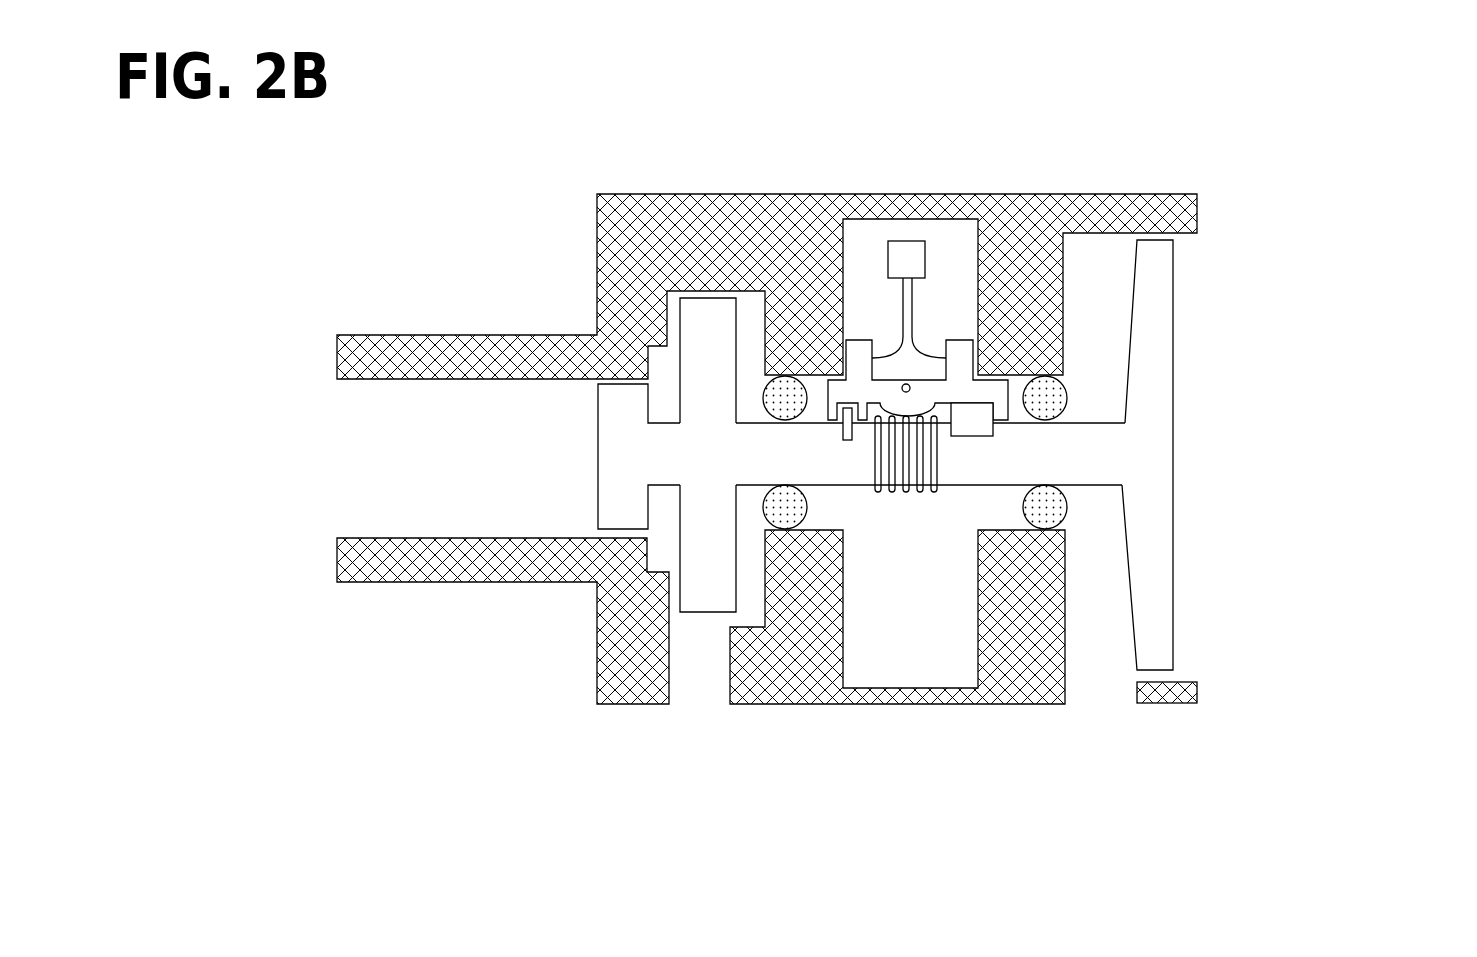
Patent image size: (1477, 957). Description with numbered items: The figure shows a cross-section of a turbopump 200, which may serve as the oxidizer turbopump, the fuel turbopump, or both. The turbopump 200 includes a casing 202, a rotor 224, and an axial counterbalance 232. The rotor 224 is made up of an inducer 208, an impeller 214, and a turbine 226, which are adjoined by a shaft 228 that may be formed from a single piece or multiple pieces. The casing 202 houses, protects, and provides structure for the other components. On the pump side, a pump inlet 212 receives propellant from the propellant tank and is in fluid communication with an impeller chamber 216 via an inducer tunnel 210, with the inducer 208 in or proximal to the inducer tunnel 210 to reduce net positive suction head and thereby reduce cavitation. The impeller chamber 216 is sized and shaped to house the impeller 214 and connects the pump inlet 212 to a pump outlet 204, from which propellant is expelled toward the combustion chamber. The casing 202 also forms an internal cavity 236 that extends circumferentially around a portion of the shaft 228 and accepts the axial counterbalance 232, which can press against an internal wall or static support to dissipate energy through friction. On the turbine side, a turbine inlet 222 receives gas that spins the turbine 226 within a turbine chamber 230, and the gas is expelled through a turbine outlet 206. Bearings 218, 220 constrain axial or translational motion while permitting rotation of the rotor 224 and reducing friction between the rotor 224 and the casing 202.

The turbopump 200 is at (237, 655).
The casing 202 is at (791, 194).
The pump outlet 204 is at (704, 732).
The turbine outlet 206 is at (1103, 727).
The inducer 208 is at (598, 508).
The inducer tunnel 210 is at (410, 444).
The pump inlet 212 is at (283, 466).
The impeller 214 is at (707, 298).
The impeller chamber 216 is at (660, 368).
The bearing 218 is at (782, 515).
The bearing 220 is at (1043, 520).
The turbine inlet 222 is at (1264, 474).
The rotor 224 is at (1210, 566).
The turbine 226 is at (1173, 378).
The shaft 228 is at (1078, 422).
The turbine chamber 230 is at (1086, 296).
The axial counterbalance 232 is at (880, 292).
The internal cavity 236 is at (899, 645).